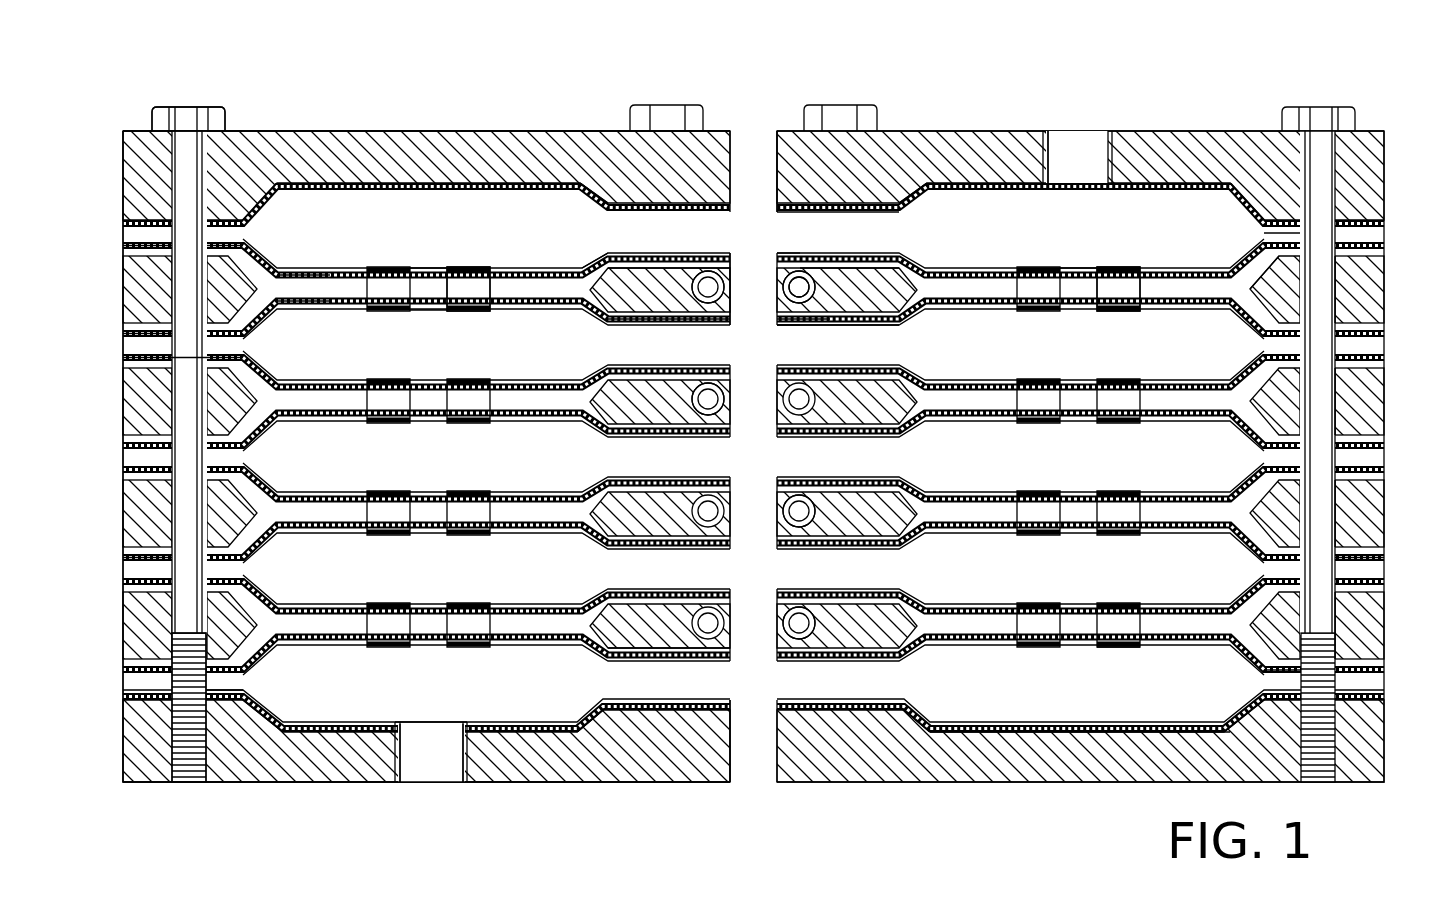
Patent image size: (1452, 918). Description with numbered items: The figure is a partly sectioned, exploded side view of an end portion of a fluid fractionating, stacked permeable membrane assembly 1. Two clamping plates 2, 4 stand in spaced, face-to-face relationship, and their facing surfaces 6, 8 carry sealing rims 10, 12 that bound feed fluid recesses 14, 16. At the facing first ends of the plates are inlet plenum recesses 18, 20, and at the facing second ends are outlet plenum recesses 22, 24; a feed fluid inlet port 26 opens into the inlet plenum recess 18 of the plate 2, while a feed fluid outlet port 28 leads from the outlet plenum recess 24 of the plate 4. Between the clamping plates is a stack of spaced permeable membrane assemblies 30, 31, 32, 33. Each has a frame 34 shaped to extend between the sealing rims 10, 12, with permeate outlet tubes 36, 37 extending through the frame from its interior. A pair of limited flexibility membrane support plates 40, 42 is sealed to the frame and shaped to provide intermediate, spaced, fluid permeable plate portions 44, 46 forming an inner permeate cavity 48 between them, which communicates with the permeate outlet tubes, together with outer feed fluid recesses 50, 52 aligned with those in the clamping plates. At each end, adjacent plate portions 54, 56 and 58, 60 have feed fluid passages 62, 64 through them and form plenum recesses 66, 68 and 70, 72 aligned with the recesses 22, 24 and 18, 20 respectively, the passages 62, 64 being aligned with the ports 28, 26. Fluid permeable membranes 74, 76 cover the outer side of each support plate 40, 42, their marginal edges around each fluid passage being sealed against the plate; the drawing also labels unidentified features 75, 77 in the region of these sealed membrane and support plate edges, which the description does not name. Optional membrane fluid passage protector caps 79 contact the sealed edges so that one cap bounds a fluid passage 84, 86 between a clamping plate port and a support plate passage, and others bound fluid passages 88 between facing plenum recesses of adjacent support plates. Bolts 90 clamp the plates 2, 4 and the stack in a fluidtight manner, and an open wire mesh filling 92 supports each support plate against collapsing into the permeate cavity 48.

The fluid fractionating, stacked permeable membrane assembly 1 is at (640, 788).
The clamping plate 2 is at (348, 128).
The clamping plate 4 is at (346, 788).
The facing surface 6 is at (745, 330).
The facing surface 8 is at (583, 703).
The sealing rim 10 is at (205, 243).
The sealing rim 12 is at (196, 785).
The feed fluid recess 14 is at (603, 207).
The feed fluid recess 16 is at (733, 700).
The inlet plenum recess 18 is at (928, 200).
The inlet plenum recess 20 is at (952, 705).
The outlet plenum recess 22 is at (263, 247).
The outlet plenum recess 24 is at (232, 702).
The feed fluid inlet port 26 is at (1070, 137).
The feed fluid outlet port 28 is at (432, 760).
The permeable membrane assembly 30 is at (648, 280).
The permeable membrane assembly 31 is at (677, 390).
The permeable membrane assembly 32 is at (797, 522).
The permeable membrane assembly 33 is at (790, 642).
The frame 34 is at (1392, 285).
The permeate outlet tube 36 is at (713, 272).
The permeate outlet tube 37 is at (805, 200).
The membrane support plate 40 is at (757, 228).
The membrane support plate 42 is at (778, 338).
The fluid permeable plate portion 44 is at (800, 268).
The fluid permeable plate portion 46 is at (790, 322).
The permeate cavity 48 is at (803, 268).
The outer feed fluid recess 50 is at (860, 241).
The outer feed fluid recess 52 is at (860, 356).
The adjacent plate portion 54 is at (300, 283).
The adjacent plate portion 56 is at (322, 303).
The adjacent plate portion 58 is at (1110, 290).
The adjacent plate portion 60 is at (1122, 298).
The feed fluid passage 62 is at (418, 278).
The feed fluid passage 64 is at (1077, 265).
The plenum recess 66 is at (283, 192).
The plenum recess 68 is at (215, 346).
The plenum recess 70 is at (1242, 233).
The plenum recess 72 is at (1275, 300).
The fluid permeable membrane 74 is at (560, 263).
The outer clamp 75 is at (442, 300).
The fluid permeable membrane 76 is at (640, 328).
The inner clamp 77 is at (458, 292).
The membrane fluid passage protector cap 79 is at (1110, 652).
The fluid passage 84 is at (1238, 212).
The fluid passage 86 is at (468, 740).
The fluid passage 88 is at (275, 568).
The bolt 90 is at (162, 112).
The open wire mesh filling 92 is at (872, 282).